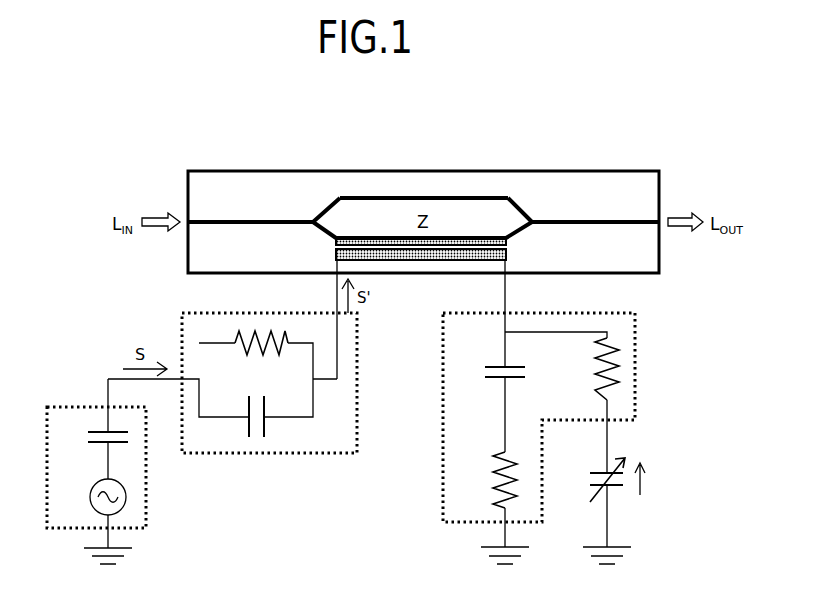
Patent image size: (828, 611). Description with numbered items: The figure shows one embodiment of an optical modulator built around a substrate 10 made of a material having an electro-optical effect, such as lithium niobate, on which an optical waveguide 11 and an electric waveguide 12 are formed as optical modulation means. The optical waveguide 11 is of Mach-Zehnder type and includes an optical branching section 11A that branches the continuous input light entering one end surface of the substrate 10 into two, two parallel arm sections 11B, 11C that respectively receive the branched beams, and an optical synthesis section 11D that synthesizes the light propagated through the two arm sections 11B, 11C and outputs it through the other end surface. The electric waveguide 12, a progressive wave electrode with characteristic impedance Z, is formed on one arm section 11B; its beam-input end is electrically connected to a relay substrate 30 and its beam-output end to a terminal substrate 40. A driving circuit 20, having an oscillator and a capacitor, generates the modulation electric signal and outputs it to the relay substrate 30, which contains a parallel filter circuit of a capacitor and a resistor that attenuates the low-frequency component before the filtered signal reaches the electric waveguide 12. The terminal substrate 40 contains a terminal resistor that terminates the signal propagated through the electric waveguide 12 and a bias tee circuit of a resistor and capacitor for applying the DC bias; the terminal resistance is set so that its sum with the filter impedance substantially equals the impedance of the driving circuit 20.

The substrate 10 is at (245, 171).
The optical waveguide 11 is at (210, 220).
The optical branching section 11A is at (311, 220).
The arm section 11B is at (368, 237).
The arm section 11C is at (405, 198).
The optical synthesis section 11D is at (534, 220).
The electric waveguide 12 is at (479, 236).
The driving circuit 20 is at (90, 407).
The relay substrate 30 is at (181, 342).
The terminal substrate 40 is at (637, 365).